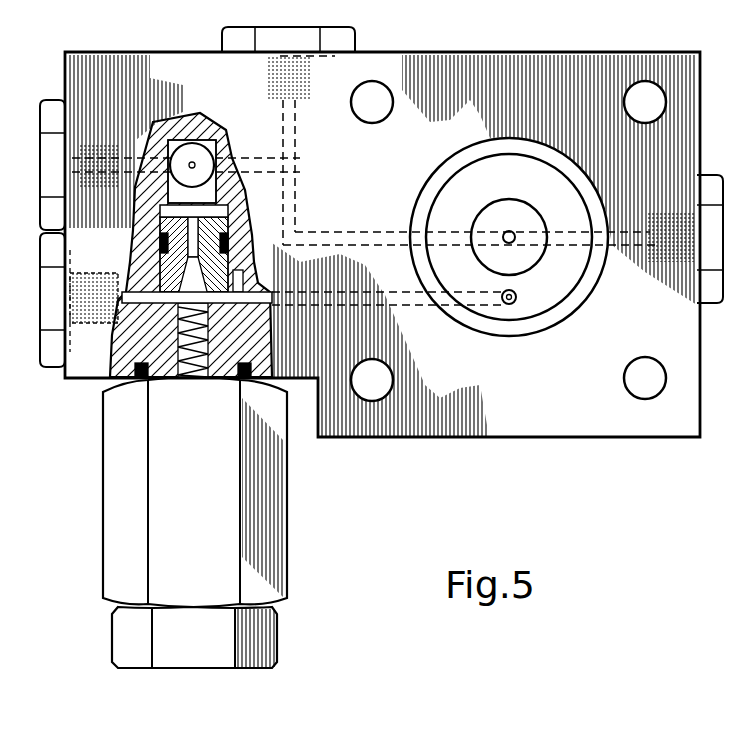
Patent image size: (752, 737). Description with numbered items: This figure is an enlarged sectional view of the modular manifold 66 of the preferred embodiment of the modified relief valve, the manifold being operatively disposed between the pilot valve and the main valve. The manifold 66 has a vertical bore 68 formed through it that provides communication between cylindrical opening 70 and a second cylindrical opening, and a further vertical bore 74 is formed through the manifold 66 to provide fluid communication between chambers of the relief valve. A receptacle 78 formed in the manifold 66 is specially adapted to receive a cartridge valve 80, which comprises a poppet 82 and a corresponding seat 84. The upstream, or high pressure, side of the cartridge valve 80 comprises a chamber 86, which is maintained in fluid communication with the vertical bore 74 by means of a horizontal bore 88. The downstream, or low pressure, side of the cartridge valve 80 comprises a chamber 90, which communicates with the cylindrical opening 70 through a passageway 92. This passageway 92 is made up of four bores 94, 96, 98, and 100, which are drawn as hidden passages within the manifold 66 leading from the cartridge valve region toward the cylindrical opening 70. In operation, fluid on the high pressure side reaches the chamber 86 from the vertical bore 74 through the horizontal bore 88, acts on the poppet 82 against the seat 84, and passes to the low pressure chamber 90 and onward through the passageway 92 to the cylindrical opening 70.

The modular manifold 66 is at (637, 425).
The vertical bore 68 is at (514, 233).
The cylindrical opening 70 is at (548, 142).
The vertical bore 74 is at (512, 303).
The receptacle 78 is at (130, 383).
The cartridge valve 80 is at (205, 658).
The poppet 82 is at (134, 258).
The seat 84 is at (160, 211).
The chamber 86 is at (268, 303).
The horizontal bore 88 is at (390, 302).
The chamber 90 is at (156, 135).
The passageway 92 is at (312, 202).
The bore 94 is at (190, 160).
The bore 96 is at (258, 157).
The bore 98 is at (300, 140).
The bore 100 is at (357, 243).